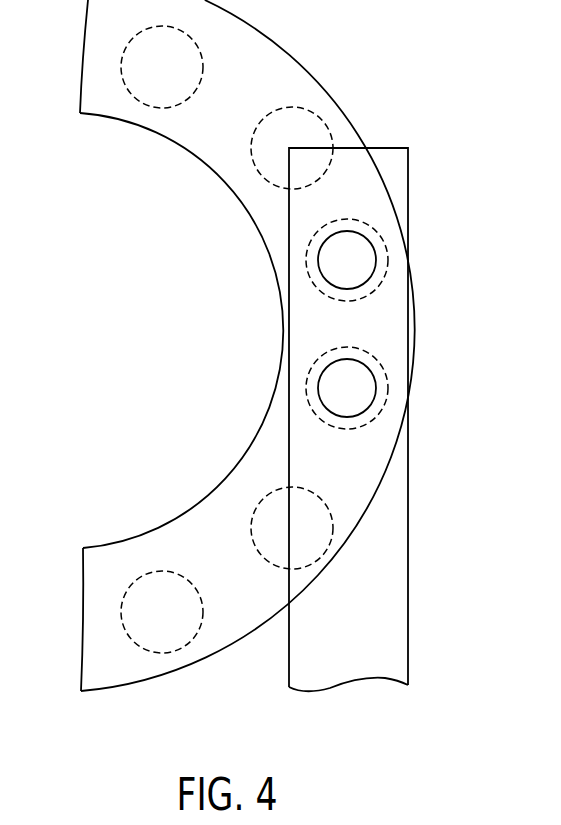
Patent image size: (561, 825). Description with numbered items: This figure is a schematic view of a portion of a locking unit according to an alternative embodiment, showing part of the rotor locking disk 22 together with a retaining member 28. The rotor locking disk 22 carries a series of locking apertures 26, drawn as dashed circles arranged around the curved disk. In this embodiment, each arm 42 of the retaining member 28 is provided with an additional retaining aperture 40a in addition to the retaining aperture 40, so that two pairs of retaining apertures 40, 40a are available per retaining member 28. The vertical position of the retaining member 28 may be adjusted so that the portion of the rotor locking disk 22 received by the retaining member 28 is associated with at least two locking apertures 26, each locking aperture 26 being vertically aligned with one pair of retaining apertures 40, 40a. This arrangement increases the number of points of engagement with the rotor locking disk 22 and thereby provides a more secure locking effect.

The rotor locking disk 22 is at (100, 677).
The locking aperture 26 is at (282, 110).
The retaining member 28 is at (445, 463).
The retaining aperture 40 is at (370, 253).
The additional retaining aperture 40a is at (360, 393).
The arm 42 is at (397, 605).